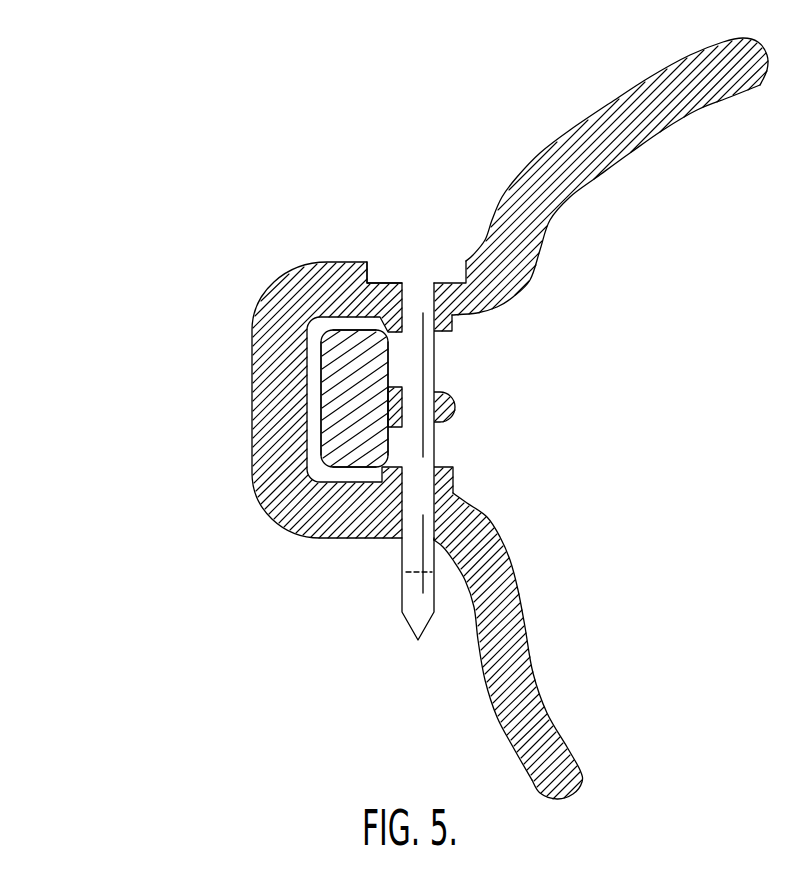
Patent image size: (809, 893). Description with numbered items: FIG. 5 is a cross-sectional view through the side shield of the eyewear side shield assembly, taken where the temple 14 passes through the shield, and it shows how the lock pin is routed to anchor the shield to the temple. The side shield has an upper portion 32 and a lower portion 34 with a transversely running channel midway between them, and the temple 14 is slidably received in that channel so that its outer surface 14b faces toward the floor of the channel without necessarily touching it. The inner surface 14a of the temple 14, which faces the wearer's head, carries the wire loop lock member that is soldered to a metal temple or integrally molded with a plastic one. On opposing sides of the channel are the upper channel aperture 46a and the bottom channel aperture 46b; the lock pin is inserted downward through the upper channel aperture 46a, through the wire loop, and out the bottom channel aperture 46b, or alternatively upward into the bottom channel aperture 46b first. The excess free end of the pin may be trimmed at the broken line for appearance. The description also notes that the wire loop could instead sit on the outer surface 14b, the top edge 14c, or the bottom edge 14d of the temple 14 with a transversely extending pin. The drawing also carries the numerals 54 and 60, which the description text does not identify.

The temple 14 is at (343, 397).
The inner surface of the temple 14a is at (388, 384).
The outer surface of the temple 14b is at (322, 442).
The top edge of the temple 14c is at (330, 313).
The bottom edge of the temple 14d is at (348, 490).
The upper portion 32 is at (623, 127).
The lower portion 34 is at (532, 695).
The upper channel aperture 46a is at (410, 317).
The bottom channel aperture 46b is at (422, 523).
The slot 54 is at (449, 275).
The retainer body 60 is at (378, 282).